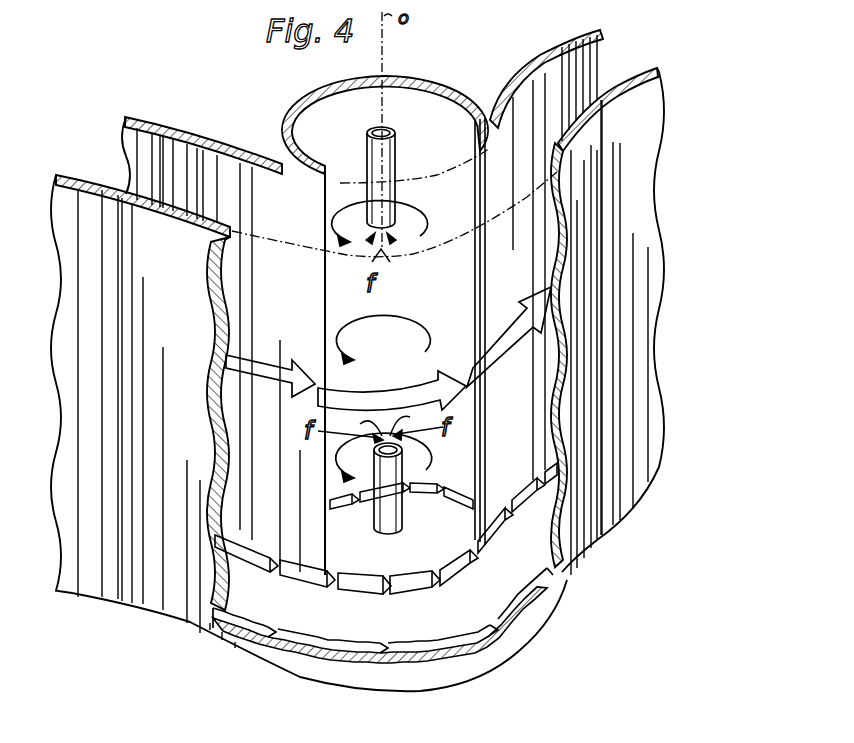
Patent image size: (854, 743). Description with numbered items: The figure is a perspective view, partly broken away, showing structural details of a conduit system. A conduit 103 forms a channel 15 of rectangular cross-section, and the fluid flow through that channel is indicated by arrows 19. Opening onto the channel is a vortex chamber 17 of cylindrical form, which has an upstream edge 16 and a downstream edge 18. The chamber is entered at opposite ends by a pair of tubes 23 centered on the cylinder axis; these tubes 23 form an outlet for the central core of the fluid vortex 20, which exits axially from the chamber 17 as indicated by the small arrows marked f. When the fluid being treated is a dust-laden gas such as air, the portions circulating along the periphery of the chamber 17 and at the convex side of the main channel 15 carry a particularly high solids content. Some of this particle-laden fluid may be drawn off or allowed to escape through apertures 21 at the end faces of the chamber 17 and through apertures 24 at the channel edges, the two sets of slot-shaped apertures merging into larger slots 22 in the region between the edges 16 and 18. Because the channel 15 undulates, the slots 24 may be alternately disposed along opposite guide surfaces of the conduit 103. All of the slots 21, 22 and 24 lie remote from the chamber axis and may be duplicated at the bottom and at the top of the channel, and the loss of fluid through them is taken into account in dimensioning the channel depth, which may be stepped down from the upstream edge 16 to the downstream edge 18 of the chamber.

The channel 15 is at (182, 143).
The upstream edge 16 is at (325, 312).
The vortex chamber 17 is at (425, 110).
The downstream edge 18 is at (481, 273).
The arrows 19 is at (268, 377).
The fluid vortex 20 is at (428, 220).
The apertures 21 is at (463, 492).
The slots 22 is at (457, 567).
The tubes 23 is at (396, 158).
The apertures 24 is at (300, 573).
The conduit 103 is at (590, 50).